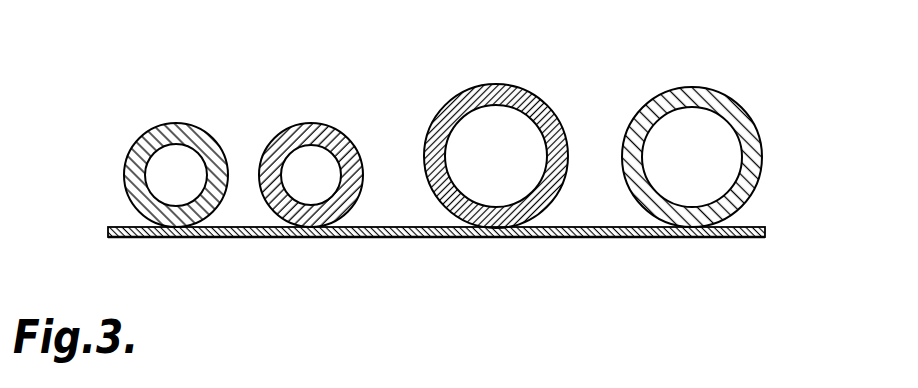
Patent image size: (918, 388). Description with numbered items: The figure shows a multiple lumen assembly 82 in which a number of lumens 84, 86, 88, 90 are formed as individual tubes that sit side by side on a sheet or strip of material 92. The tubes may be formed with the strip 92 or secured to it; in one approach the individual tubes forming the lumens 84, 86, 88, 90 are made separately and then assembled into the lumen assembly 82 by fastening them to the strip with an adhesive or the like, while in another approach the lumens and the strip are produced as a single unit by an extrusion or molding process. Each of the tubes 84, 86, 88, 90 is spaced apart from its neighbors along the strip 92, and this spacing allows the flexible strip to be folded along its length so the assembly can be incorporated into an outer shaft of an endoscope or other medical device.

The multiple lumen assembly 82 is at (243, 59).
The lumen 84 is at (180, 123).
The lumen 86 is at (313, 123).
The lumen 88 is at (498, 84).
The lumen 90 is at (695, 87).
The strip of material 92 is at (765, 233).